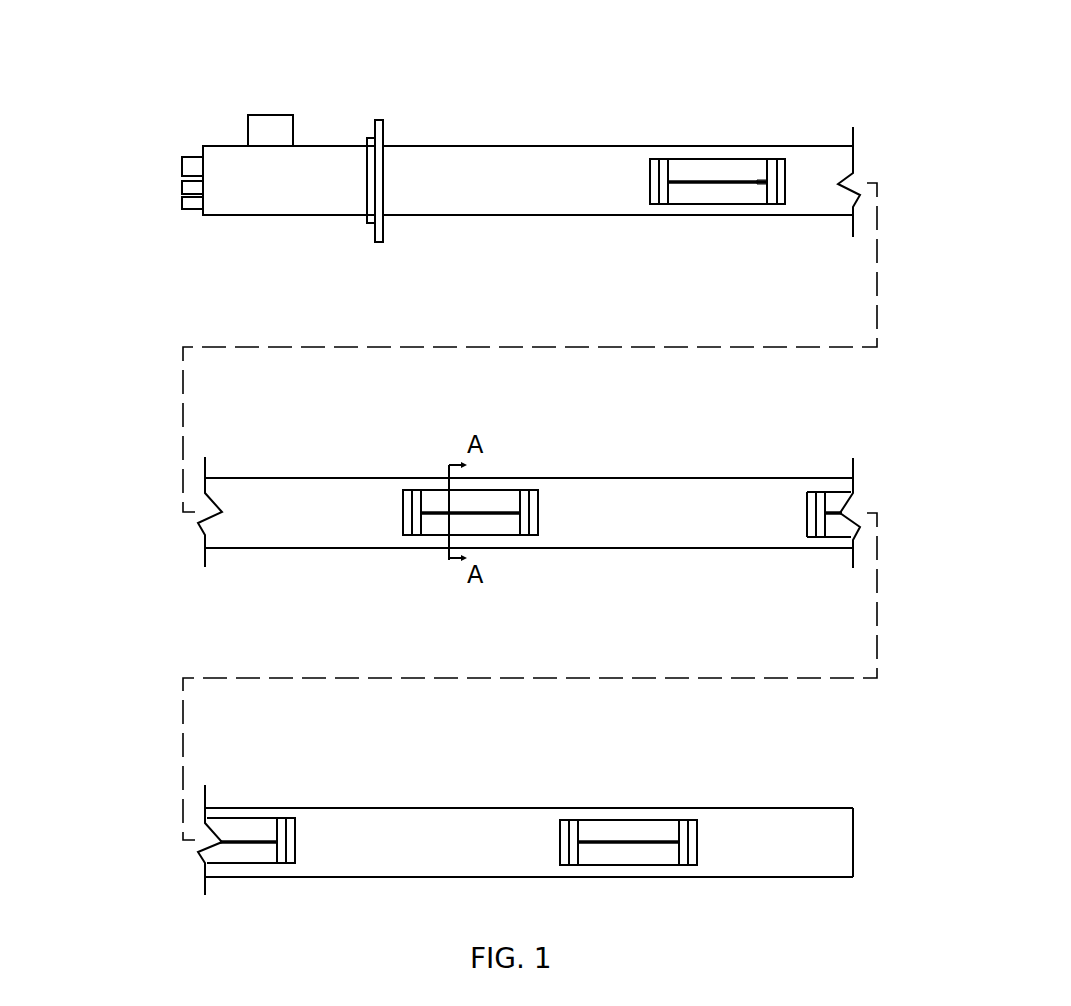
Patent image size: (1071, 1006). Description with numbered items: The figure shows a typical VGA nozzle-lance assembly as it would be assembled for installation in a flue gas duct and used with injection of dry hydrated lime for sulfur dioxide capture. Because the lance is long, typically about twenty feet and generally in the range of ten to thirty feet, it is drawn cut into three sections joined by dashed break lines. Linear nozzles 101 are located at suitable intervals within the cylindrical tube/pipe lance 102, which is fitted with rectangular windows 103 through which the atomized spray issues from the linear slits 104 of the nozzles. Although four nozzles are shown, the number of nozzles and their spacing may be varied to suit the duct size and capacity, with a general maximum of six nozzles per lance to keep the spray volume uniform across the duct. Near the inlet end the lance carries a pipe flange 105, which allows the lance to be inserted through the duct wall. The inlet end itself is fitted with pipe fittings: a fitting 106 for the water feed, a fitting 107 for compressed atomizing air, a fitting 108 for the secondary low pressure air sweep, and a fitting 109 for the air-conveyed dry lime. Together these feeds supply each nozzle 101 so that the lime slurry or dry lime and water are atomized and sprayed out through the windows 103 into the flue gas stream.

The linear nozzle 101 is at (718, 175).
The cylindrical tube/pipe lance 102 is at (525, 147).
The rectangular window 103 is at (692, 204).
The linear slit 104 is at (757, 182).
The pipe flange 105 is at (375, 242).
The pipe fitting for water feed 106 is at (182, 203).
The pipe fitting for compressed atomizing air 107 is at (182, 185).
The pipe fitting for secondary low pressure air sweep 108 is at (182, 163).
The pipe fitting for air conveyed dry lime 109 is at (268, 113).